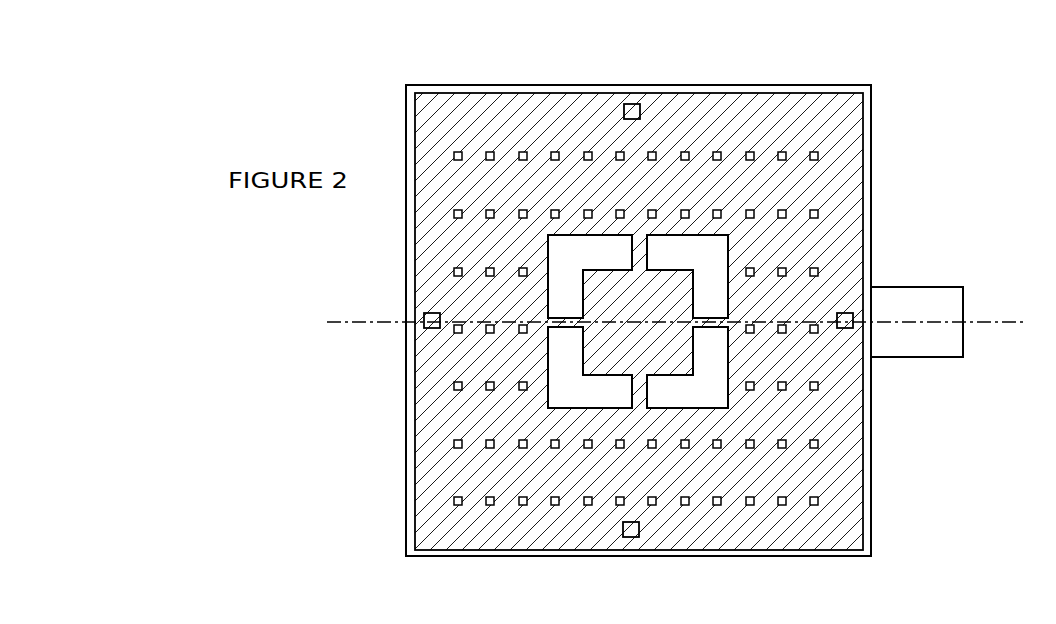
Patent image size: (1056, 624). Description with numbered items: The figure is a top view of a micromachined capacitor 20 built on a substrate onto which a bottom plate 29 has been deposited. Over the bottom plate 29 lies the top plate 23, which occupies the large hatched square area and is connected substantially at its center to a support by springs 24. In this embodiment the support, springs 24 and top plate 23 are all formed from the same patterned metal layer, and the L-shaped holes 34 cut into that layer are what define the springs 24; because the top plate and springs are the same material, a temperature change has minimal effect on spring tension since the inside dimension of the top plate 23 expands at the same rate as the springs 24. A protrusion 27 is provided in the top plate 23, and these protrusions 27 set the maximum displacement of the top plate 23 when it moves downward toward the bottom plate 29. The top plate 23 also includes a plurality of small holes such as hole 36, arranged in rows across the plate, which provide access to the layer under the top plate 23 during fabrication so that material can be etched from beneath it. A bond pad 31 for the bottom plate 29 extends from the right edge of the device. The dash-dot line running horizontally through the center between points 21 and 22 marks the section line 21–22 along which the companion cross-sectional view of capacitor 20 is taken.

The capacitor 20 is at (176, 263).
The line 21–22 end 21 is at (360, 330).
The line 21–22 end 22 is at (998, 330).
The top plate 23 is at (864, 490).
The springs 24 is at (637, 264).
The protrusion 27 is at (632, 107).
The bottom plate 29 is at (758, 552).
The bond pad 31 is at (922, 343).
The holes 34 is at (558, 252).
The hole 36 is at (454, 157).